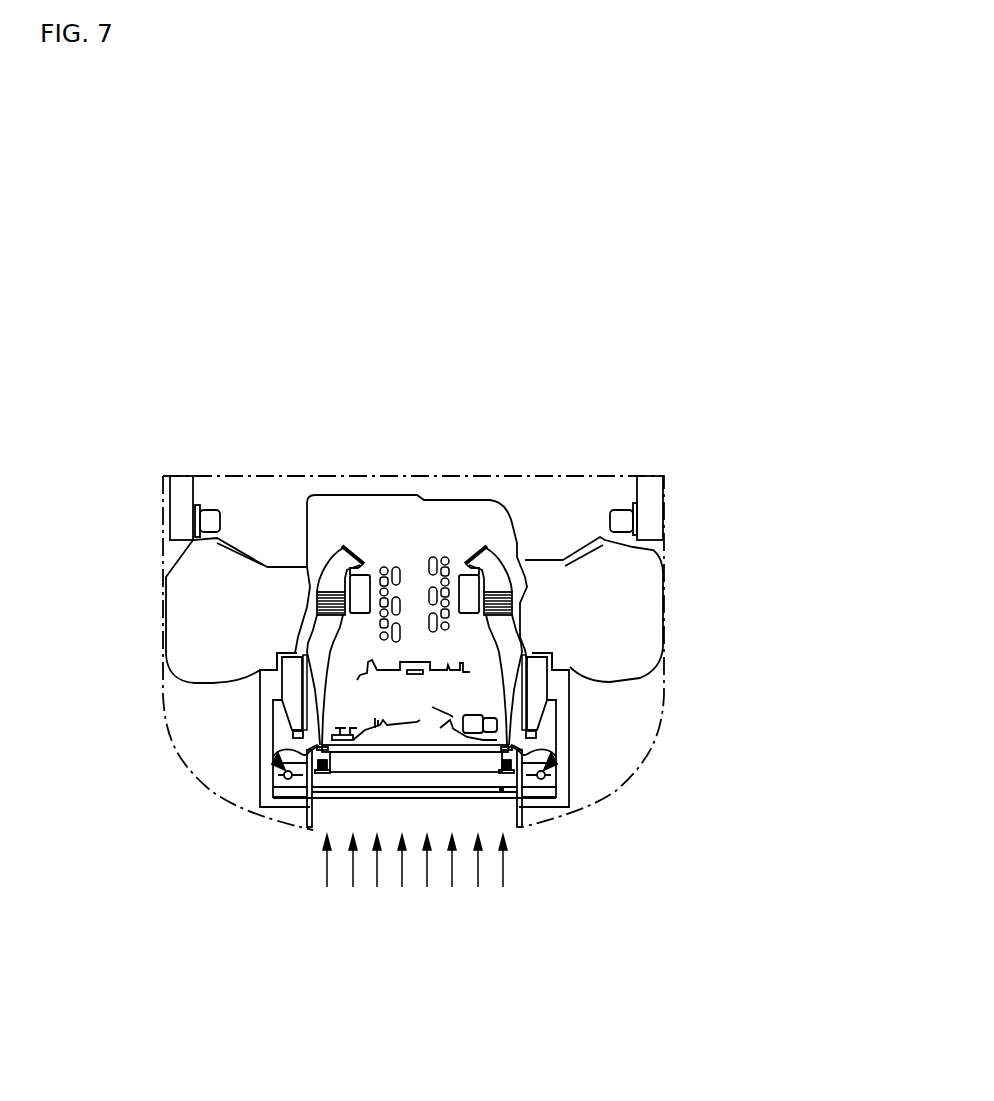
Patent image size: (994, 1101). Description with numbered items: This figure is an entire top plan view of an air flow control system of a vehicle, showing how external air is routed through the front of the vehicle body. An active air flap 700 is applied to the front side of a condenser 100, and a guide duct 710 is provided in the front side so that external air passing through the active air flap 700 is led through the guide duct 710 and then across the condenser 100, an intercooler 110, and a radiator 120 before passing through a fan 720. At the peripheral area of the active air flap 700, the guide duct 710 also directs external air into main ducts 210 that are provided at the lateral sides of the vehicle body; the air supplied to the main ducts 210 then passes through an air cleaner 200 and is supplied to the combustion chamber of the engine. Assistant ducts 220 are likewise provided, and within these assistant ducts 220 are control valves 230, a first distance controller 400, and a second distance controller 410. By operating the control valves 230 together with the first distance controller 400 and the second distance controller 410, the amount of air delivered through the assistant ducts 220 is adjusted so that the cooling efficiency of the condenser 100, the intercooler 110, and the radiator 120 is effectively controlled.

The condenser 100 is at (410, 792).
The intercooler 110 is at (426, 773).
The radiator 120 is at (470, 755).
The air cleaner 200 is at (302, 727).
The main duct 210 is at (260, 760).
The assistant duct 220 is at (287, 787).
The control valve 230 is at (275, 758).
The first distance controller 400 is at (283, 697).
The second distance controller 410 is at (529, 720).
The active air flap 700 is at (340, 800).
The guide duct 710 is at (520, 810).
The fan 720 is at (390, 745).